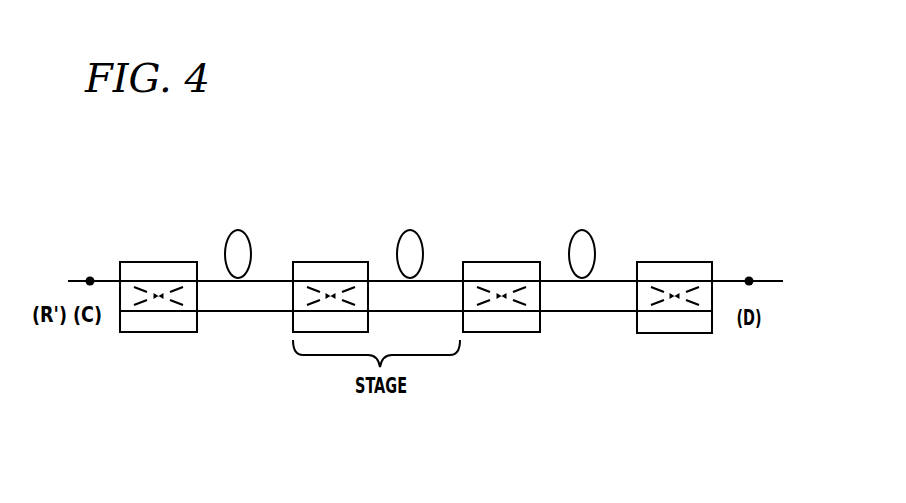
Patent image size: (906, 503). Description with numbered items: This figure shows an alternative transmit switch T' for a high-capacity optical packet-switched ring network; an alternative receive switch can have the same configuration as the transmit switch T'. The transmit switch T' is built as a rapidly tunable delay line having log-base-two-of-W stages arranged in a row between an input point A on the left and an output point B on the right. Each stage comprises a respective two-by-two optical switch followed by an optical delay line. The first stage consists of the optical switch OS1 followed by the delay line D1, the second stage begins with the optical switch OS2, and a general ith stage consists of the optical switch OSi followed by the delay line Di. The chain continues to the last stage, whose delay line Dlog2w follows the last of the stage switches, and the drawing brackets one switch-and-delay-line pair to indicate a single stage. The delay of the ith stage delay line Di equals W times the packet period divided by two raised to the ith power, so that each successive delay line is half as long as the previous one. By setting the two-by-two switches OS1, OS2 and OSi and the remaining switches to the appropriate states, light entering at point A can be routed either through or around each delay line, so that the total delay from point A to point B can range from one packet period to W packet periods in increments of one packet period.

The 2×2 optical switch OS1 is at (158, 262).
The 2×2 optical switch OS2 is at (329, 262).
The 2×2 optical switch OSi is at (502, 262).
The optical delay line D1 is at (238, 230).
The optical delay line Di is at (410, 230).
The optical delay line Dlog2w is at (582, 230).
The transmit switch T' is at (321, 128).
The input point A is at (425, 269).
The output point B is at (749, 269).